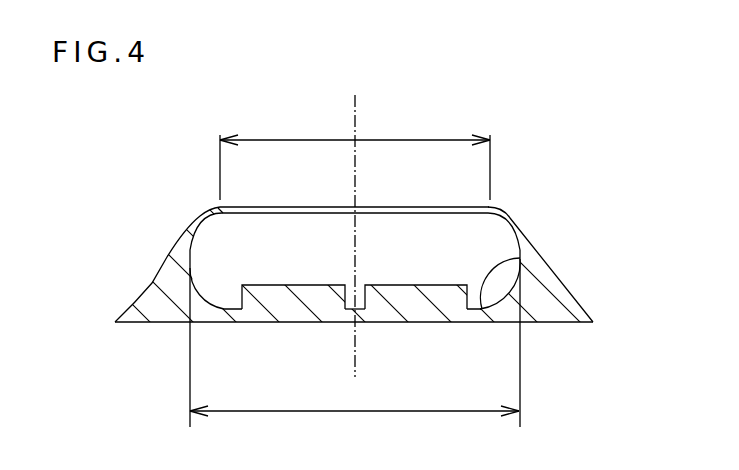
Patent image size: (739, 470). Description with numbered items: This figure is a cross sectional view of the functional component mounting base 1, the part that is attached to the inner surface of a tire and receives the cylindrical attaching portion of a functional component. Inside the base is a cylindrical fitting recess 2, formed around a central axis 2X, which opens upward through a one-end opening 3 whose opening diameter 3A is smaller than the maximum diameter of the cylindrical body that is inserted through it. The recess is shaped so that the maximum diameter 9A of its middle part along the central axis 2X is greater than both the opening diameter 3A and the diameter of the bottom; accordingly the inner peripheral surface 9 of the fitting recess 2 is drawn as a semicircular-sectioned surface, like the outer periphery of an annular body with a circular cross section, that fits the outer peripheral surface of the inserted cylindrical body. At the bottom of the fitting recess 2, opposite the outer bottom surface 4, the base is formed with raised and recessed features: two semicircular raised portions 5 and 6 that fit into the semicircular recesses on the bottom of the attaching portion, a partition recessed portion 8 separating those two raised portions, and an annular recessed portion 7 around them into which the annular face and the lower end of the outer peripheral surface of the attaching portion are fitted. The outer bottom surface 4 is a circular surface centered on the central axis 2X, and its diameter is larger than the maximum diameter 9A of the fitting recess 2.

The functional component mounting base 1 is at (527, 232).
The fitting recess 2 is at (366, 256).
The central axis 2X is at (357, 121).
The opening 3 is at (247, 208).
The opening diameter 3A is at (431, 140).
The outer bottom surface 4 is at (417, 322).
The semicircular raised portion 5 is at (280, 285).
The semicircular raised portion 6 is at (403, 285).
The annular recessed portion 7 is at (521, 258).
The partition recessed portion 8 is at (352, 309).
The inner peripheral surface 9 is at (192, 272).
The maximum diameter 9A is at (362, 411).